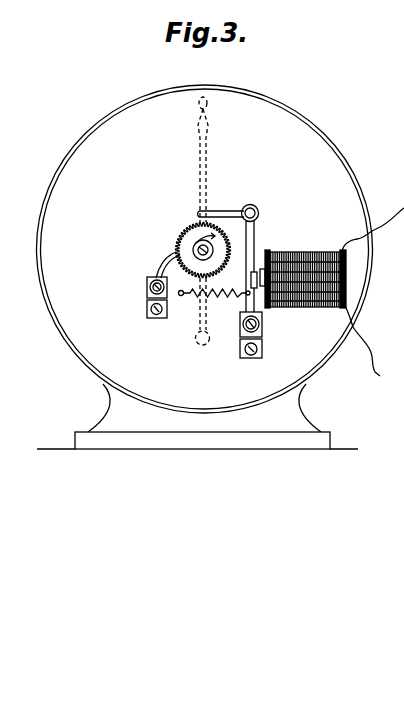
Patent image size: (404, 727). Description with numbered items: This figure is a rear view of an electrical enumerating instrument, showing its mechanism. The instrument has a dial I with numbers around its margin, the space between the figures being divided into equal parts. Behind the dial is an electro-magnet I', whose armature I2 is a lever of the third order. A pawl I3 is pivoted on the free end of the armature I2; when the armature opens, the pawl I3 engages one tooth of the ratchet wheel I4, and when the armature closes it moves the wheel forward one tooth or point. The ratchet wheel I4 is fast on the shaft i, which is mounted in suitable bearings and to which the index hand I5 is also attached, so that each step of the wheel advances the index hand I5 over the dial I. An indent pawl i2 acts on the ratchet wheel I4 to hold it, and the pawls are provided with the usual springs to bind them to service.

The dial I is at (205, 267).
The electro-magnet I' is at (332, 292).
The armature I2 is at (256, 229).
The pawl I3 is at (210, 212).
The ratchet wheel I4 is at (216, 296).
The index hand I5 is at (208, 157).
The shaft i is at (178, 236).
The indent pawl i2 is at (162, 260).